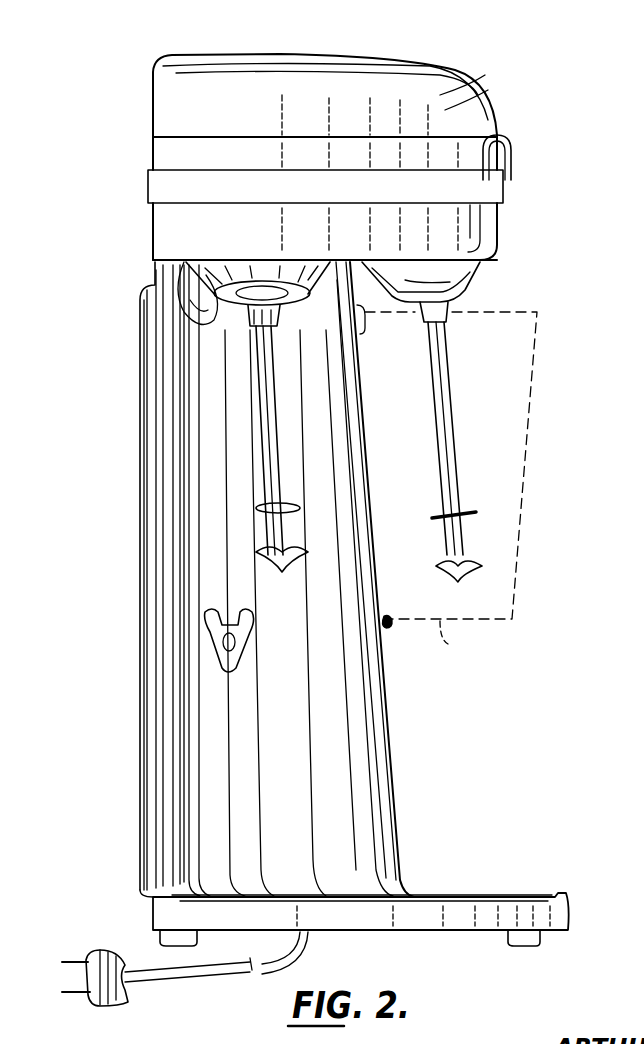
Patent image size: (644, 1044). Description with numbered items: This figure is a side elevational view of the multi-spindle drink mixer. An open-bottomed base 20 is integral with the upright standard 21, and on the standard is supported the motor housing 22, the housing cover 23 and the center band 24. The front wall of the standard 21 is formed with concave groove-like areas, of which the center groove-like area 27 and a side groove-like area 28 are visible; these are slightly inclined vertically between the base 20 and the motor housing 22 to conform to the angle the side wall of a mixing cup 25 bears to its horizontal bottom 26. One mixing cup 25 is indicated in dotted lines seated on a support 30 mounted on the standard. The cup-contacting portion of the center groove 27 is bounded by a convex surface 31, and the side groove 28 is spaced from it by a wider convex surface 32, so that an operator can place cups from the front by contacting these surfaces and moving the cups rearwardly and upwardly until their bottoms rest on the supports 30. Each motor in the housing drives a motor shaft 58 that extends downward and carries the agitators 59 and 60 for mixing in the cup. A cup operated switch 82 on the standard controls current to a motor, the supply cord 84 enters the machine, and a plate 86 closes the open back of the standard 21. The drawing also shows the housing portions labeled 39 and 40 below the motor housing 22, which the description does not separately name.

The base 20 is at (558, 897).
The standard 21 is at (378, 872).
The motor housing 22 is at (472, 238).
The housing cover 23 is at (478, 112).
The center band 24 is at (500, 152).
The mixing cup 25 is at (520, 556).
The cup bottom 26 is at (460, 638).
The center groove-like area 27 is at (383, 656).
The side groove-like area 28 is at (285, 778).
The cup support 30 is at (246, 636).
The convex surface 31 is at (378, 690).
The wider convex surface 32 is at (338, 722).
The right spindle housing 39 is at (482, 286).
The left spindle housing 40 is at (288, 320).
The motor shaft 58 is at (276, 450).
The agitator 59 is at (300, 512).
The agitator 60 is at (280, 572).
The cup operated switch 82 is at (364, 326).
The cord 84 is at (150, 972).
The plate 86 is at (140, 690).